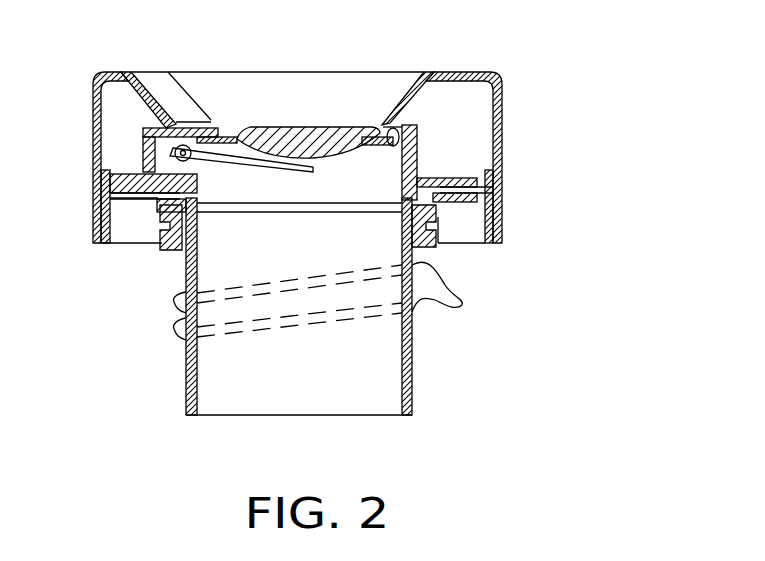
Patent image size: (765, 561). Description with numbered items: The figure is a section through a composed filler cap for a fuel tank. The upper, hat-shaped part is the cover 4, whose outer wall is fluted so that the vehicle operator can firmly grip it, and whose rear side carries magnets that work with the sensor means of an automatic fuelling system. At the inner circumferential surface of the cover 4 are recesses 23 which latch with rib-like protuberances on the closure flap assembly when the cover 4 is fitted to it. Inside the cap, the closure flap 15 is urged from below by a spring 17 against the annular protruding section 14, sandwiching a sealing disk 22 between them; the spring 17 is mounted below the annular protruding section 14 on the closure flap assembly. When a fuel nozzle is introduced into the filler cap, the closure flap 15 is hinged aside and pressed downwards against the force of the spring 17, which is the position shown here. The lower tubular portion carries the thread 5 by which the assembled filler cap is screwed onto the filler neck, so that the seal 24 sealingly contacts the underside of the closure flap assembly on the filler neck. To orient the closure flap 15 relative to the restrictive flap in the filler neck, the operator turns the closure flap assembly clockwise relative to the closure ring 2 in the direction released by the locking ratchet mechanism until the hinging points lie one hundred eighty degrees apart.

The closure ring 2 is at (309, 266).
The cover 4 is at (505, 118).
The thread 5 is at (327, 301).
The annular protruding section 14 is at (428, 150).
The closure flap 15 is at (303, 133).
The spring 17 is at (257, 127).
The sealing disk 22 is at (392, 143).
The recesses 23 is at (500, 189).
The seal 24 is at (160, 230).